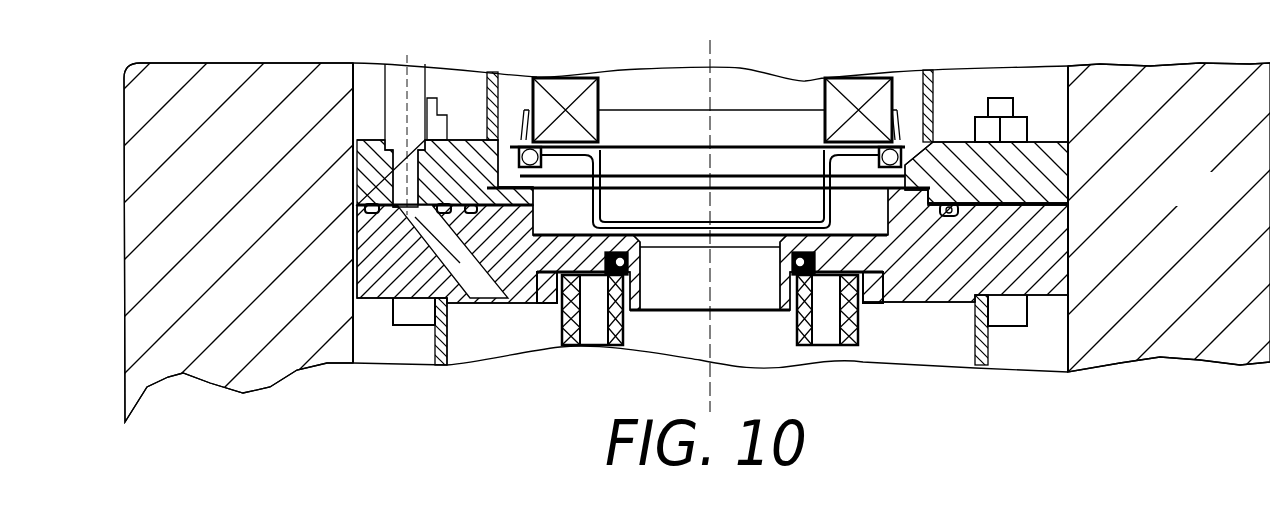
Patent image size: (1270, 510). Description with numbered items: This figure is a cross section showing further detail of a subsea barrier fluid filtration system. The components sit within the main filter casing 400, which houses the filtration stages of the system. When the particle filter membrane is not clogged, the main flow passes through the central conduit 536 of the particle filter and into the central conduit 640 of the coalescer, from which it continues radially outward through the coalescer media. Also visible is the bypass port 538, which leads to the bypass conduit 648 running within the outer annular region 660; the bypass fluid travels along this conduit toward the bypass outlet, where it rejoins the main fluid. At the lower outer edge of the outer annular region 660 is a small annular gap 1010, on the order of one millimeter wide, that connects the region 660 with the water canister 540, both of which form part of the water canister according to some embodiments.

The main filter casing 400 is at (1214, 203).
The central conduit of the particle filter 536 is at (757, 349).
The bypass port 538 is at (470, 272).
The water canister 540 is at (1054, 357).
The central conduit of coalescer 640 is at (685, 92).
The bypass conduit 648 is at (395, 90).
The outer annular region 660 is at (1056, 97).
The gap 1010 is at (357, 288).